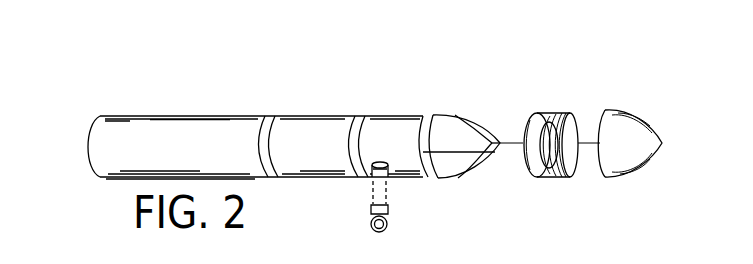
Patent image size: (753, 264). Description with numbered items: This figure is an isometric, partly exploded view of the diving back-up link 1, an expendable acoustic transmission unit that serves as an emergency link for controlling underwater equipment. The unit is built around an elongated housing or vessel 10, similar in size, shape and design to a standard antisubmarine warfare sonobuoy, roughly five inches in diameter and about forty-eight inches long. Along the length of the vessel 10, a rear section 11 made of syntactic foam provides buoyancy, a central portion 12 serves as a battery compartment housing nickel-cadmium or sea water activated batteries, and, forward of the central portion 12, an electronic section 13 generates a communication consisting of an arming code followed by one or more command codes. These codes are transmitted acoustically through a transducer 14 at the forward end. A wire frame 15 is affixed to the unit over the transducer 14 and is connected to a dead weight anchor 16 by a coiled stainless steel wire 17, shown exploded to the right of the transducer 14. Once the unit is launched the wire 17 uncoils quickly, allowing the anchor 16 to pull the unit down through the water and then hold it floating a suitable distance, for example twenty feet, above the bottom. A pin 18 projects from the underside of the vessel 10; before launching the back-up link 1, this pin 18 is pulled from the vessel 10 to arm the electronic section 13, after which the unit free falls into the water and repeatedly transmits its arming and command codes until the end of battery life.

The diving back-up link 1 is at (364, 95).
The housing or vessel 10 is at (83, 150).
The rear section 11 is at (230, 115).
The central portion 12 is at (311, 115).
The electronic section 13 is at (402, 115).
The transducer 14 is at (467, 134).
The wire frame 15 is at (490, 153).
The dead weight anchor 16 is at (640, 113).
The coiled stainless steel wire 17 is at (558, 113).
The pin 18 is at (390, 212).